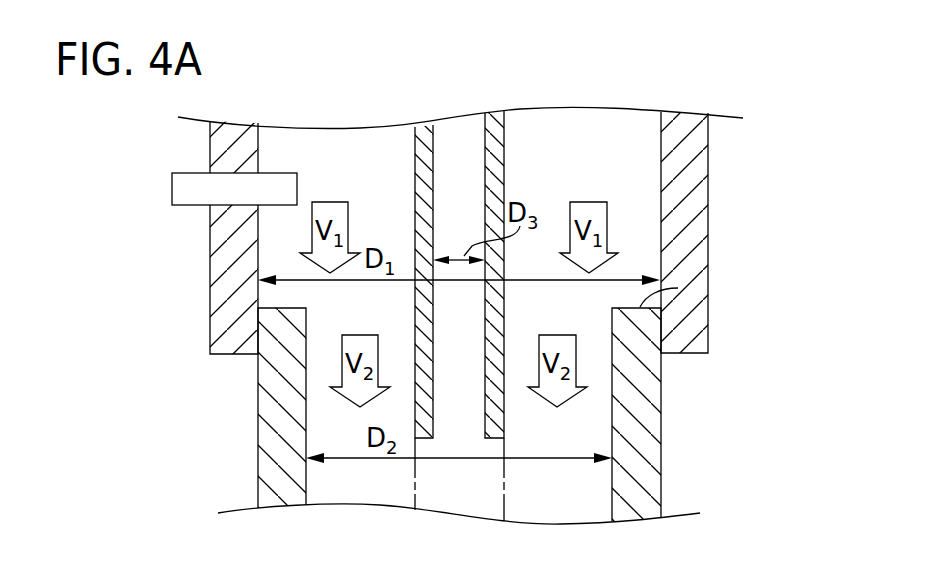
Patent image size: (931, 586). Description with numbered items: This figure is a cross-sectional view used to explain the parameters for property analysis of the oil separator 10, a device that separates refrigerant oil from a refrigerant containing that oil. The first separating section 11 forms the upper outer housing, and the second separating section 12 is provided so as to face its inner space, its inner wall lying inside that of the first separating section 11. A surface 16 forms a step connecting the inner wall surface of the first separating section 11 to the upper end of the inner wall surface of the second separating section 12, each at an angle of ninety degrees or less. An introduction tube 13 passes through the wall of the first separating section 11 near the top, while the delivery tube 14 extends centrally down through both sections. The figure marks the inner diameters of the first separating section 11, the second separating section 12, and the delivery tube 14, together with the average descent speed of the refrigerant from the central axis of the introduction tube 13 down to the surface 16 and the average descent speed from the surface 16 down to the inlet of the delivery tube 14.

The oil separator 10 is at (604, 72).
The first separating section 11 is at (698, 223).
The second separating section 12 is at (650, 417).
The introduction tube 13 is at (185, 195).
The delivery tube 14 is at (497, 112).
The surface 16 is at (678, 288).